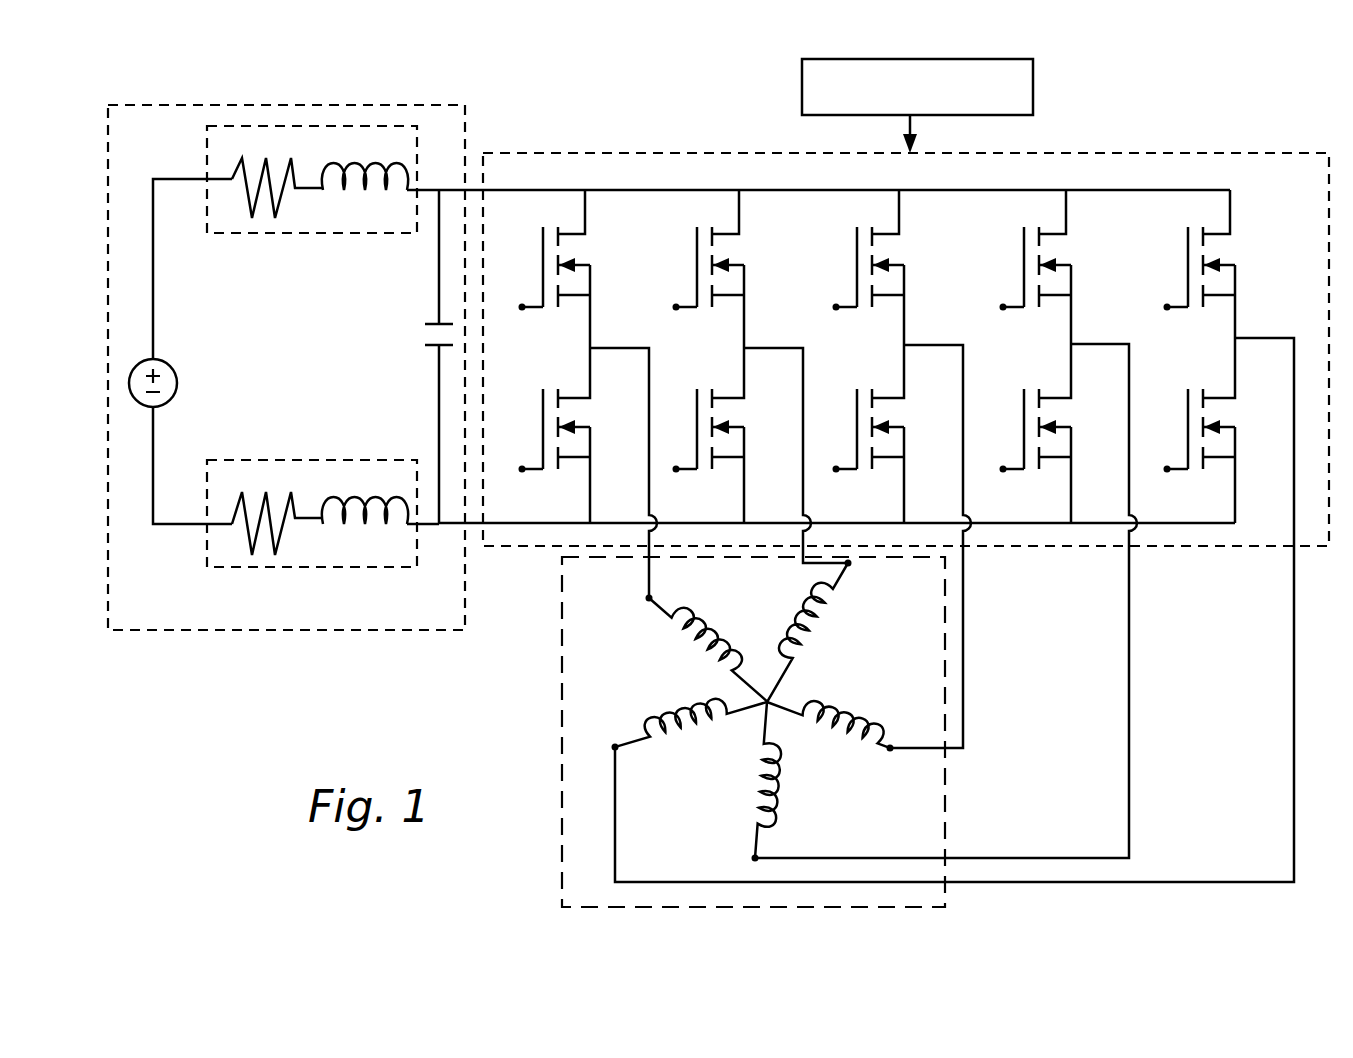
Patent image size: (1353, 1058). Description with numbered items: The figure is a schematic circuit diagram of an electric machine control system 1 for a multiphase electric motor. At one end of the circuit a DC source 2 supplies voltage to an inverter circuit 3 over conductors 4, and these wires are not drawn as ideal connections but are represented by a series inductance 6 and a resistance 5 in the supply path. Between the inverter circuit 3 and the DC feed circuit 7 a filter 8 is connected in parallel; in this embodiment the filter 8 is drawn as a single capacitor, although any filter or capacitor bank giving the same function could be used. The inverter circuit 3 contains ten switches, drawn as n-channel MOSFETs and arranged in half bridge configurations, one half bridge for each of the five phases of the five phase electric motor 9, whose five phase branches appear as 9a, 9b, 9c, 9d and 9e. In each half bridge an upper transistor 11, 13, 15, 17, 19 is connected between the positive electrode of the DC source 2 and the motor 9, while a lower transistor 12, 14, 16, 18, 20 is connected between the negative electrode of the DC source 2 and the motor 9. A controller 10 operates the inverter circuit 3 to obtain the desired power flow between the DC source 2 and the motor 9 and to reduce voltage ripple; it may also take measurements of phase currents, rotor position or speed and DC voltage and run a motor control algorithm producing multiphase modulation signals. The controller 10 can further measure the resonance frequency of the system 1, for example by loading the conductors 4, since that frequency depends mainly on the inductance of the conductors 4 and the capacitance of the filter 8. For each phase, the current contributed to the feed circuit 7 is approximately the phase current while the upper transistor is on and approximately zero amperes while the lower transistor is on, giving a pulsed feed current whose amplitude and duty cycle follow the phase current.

The electric machine control system 1 is at (220, 665).
The DC source 2 is at (129, 381).
The inverter circuit 3 is at (612, 72).
The conductors 4 is at (308, 126).
The resistance 5 is at (274, 210).
The series inductance 6 is at (380, 200).
The DC feed circuit 7 is at (122, 632).
The filter 8 is at (408, 336).
The five phase electric motor 9 is at (561, 781).
The motor winding (phase a) 9a is at (714, 643).
The motor winding (phase b) 9b is at (806, 628).
The motor winding (phase c) 9c is at (831, 728).
The motor winding (phase d) 9d is at (748, 780).
The motor winding (phase e) 9e is at (688, 716).
The controller 10 is at (932, 104).
The upper transistor 11 is at (592, 262).
The lower transistor 12 is at (592, 430).
The upper transistor 13 is at (746, 262).
The lower transistor 14 is at (746, 430).
The upper transistor 15 is at (906, 262).
The lower transistor 16 is at (906, 430).
The upper transistor 17 is at (1073, 262).
The lower transistor 18 is at (1073, 430).
The upper transistor 19 is at (1237, 262).
The lower transistor 20 is at (1237, 430).